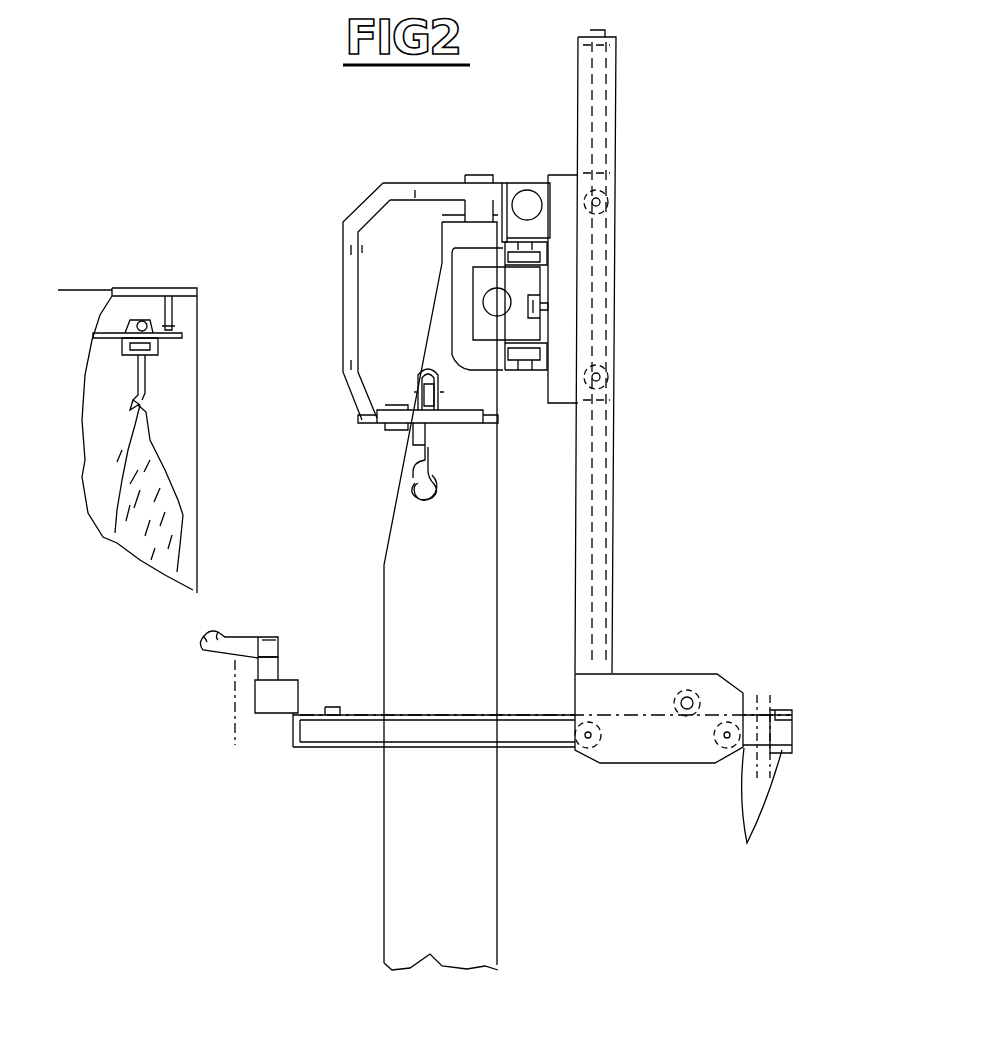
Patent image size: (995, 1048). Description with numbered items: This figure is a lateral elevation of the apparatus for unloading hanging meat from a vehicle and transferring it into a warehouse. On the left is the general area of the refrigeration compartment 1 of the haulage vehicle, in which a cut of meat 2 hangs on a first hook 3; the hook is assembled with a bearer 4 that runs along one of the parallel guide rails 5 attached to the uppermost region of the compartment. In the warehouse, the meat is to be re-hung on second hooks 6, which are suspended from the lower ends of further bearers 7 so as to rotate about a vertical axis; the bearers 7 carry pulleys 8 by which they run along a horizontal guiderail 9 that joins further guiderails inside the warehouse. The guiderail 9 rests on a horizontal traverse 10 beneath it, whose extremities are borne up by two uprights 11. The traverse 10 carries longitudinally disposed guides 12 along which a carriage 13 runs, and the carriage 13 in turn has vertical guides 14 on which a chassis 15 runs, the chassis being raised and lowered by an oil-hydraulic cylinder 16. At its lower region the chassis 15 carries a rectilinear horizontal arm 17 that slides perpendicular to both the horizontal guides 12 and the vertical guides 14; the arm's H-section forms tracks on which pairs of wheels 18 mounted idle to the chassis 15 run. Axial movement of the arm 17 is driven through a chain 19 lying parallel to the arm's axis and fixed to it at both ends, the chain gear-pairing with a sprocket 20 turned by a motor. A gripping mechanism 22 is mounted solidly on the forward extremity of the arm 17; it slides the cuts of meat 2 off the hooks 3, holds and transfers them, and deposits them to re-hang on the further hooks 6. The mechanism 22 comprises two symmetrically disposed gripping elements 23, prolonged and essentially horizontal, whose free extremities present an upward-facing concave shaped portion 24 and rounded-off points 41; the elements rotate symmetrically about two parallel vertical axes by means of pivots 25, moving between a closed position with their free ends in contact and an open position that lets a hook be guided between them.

The refrigeration compartment 1 is at (183, 270).
The cuts of meat 2 is at (126, 505).
The first hooks 3 is at (146, 393).
The bearers 4 is at (110, 348).
The guide rails 5 is at (120, 336).
The second hooks 6 is at (427, 465).
The further bearers 7 is at (413, 378).
The pulleys 8 is at (418, 374).
The horizontal guiderail 9 is at (460, 425).
The horizontal traverse 10 is at (472, 267).
The uprights 11 is at (397, 572).
The longitudinally disposed guides 12 is at (540, 258).
The carriage 13 is at (527, 168).
The vertical guides 14 is at (616, 263).
The chassis 15 is at (633, 665).
The oil-hydraulic cylinder 16 is at (593, 152).
The horizontal arm 17 is at (537, 757).
The pairs of wheels 18 is at (723, 745).
The chain 19 is at (762, 784).
The sprocket 20 is at (689, 692).
The gripping mechanism 22 is at (259, 632).
The gripping elements 23 is at (259, 713).
The concave shaped portion 24 is at (217, 636).
The pivots 25 is at (264, 636).
The rounded-off points 41 is at (203, 634).